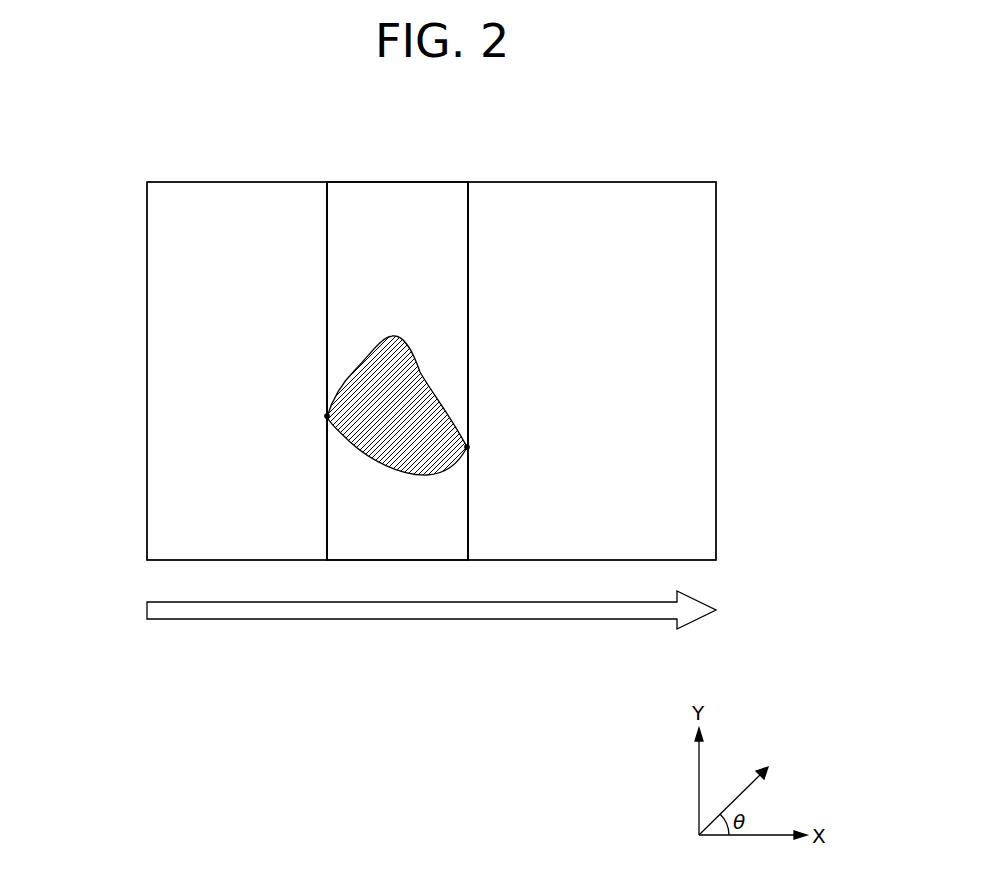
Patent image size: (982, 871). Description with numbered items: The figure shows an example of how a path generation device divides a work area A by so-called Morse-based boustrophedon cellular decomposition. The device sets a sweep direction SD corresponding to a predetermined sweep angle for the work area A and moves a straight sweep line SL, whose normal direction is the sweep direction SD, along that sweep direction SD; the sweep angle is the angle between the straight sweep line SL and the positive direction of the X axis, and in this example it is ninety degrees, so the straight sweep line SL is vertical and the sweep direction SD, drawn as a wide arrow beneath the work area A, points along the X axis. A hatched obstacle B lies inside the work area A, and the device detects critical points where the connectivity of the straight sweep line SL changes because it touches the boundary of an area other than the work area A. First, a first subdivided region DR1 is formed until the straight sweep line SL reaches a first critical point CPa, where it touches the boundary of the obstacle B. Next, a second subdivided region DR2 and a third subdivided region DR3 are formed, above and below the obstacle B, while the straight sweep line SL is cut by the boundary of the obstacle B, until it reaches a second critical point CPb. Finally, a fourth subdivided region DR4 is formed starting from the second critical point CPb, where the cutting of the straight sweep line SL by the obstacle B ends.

The work area A is at (718, 176).
The first subdivided region DR1 is at (237, 371).
The second subdivided region DR2 is at (397, 371).
The third subdivided region DR3 is at (397, 371).
The fourth subdivided region DR4 is at (592, 371).
The straight sweep line SL is at (467, 208).
The obstacle B is at (420, 369).
The first critical point CPa is at (327, 416).
The second critical point CPb is at (467, 447).
The sweep direction SD is at (322, 620).